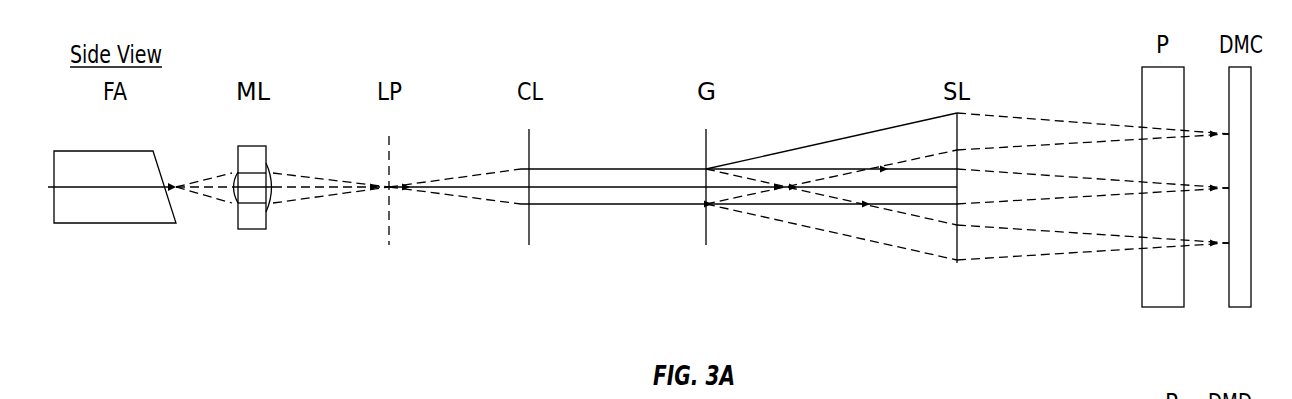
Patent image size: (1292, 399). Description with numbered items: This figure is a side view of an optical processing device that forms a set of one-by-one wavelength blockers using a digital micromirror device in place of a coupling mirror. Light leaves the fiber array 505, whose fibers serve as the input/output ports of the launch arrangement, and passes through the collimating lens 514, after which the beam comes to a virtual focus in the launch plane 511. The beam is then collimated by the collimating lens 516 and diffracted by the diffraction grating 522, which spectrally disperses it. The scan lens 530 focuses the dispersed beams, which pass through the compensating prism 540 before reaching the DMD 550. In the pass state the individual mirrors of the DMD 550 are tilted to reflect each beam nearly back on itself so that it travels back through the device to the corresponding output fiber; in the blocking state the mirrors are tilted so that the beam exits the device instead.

The fiber array 505 is at (117, 223).
The collimating lens 514 is at (268, 207).
The launch plane 511 is at (391, 222).
The collimating lens 516 is at (529, 228).
The diffraction grating 522 is at (706, 240).
The scan lens 530 is at (957, 265).
The compensating prism 540 is at (1142, 293).
The DMD 550 is at (1229, 303).